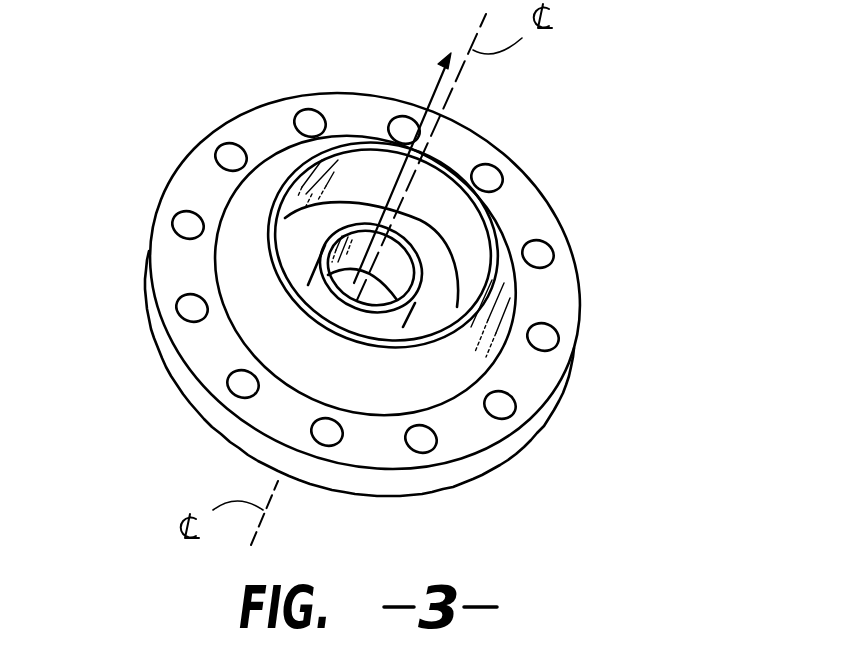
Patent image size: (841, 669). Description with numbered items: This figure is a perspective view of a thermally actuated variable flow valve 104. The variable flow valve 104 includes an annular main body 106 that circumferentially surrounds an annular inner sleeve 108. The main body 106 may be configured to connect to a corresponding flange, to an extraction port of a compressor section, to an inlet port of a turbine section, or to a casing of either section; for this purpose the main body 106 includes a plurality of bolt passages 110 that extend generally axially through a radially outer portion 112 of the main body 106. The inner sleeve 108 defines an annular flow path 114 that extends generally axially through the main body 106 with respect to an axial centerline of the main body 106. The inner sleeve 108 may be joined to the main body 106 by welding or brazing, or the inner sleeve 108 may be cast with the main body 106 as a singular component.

The variable flow valve 104 is at (353, 274).
The main body 106 is at (529, 190).
The inner sleeve 108 is at (316, 246).
The bolt passages 110 is at (543, 338).
The radially outer portion 112 is at (559, 298).
The annular flow path 114 is at (430, 92).